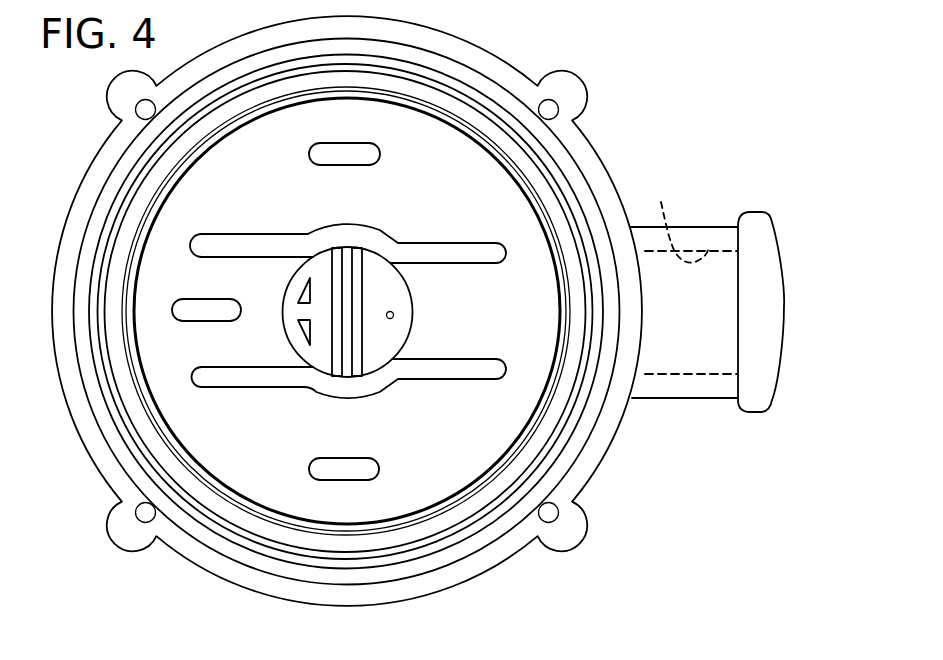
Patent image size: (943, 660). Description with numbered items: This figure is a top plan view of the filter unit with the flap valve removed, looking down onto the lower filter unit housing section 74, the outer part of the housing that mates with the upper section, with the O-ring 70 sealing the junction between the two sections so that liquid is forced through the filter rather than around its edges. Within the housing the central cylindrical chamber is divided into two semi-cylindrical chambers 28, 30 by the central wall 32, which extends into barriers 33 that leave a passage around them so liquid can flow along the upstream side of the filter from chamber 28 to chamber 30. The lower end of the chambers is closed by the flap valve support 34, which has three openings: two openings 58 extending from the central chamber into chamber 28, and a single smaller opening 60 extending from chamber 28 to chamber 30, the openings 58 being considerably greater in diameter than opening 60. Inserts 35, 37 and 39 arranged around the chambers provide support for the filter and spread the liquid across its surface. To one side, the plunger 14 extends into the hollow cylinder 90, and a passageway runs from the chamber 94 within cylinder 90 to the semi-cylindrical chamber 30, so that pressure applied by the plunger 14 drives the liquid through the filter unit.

The plunger 14 is at (757, 211).
The semi-cylindrical chamber 28 is at (314, 250).
The semi-cylindrical chamber 30 is at (383, 258).
The central wall 32 is at (343, 362).
The barriers 33 is at (378, 239).
The flap valve support 34 is at (376, 354).
The insert 35 is at (203, 308).
The insert 37 is at (311, 152).
The insert 39 is at (325, 471).
The openings 58 is at (305, 296).
The opening 60 is at (396, 315).
The O-ring 70 is at (527, 182).
The lower filter unit housing section 74 is at (522, 70).
The hollow cylinder 90 is at (698, 395).
The chamber 94 is at (678, 218).